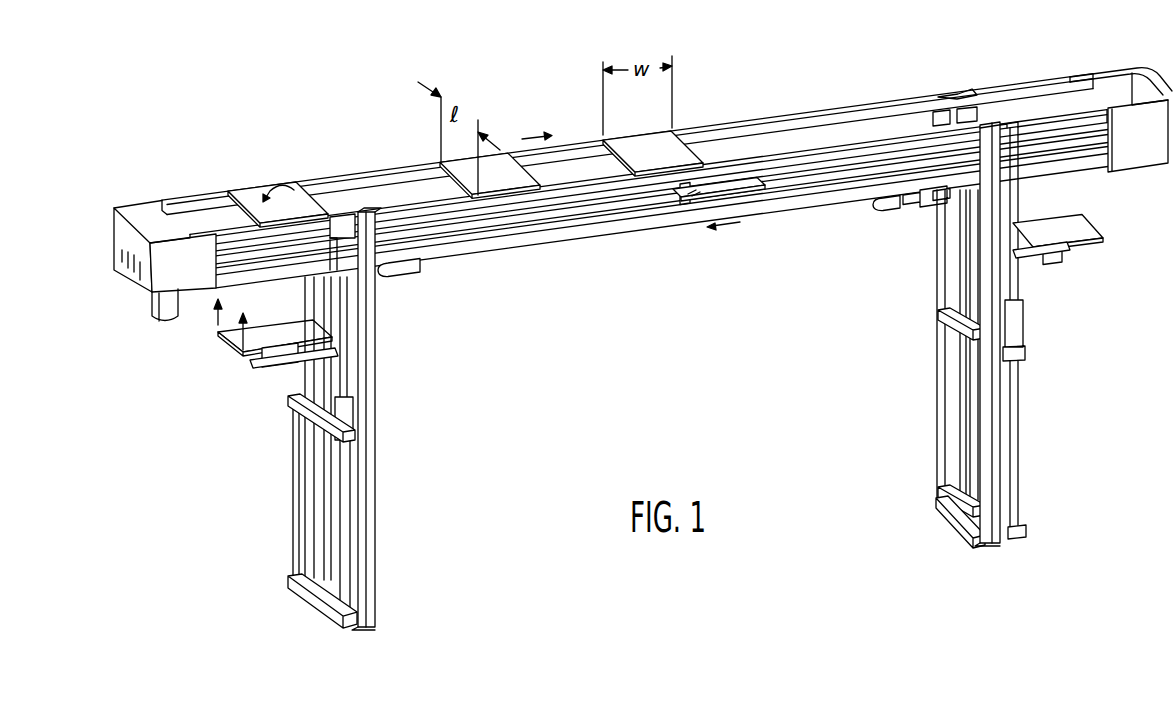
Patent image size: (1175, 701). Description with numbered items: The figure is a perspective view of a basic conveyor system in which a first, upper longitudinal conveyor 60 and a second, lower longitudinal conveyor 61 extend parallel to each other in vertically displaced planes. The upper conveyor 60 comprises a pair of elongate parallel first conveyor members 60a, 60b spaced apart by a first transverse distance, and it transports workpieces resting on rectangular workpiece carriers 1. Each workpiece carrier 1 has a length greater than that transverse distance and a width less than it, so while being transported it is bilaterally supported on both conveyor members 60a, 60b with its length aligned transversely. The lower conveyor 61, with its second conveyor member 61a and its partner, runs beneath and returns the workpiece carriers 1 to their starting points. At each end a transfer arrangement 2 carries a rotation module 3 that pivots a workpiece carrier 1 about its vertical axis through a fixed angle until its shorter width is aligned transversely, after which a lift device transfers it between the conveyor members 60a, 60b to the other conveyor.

The workpiece carrier 1 is at (657, 140).
The transfer arrangement 2 is at (293, 412).
The rotation module 3 is at (268, 361).
The first longitudinal conveyor 60 is at (775, 165).
The first conveyor member 60a is at (897, 147).
The first conveyor member 60b is at (844, 117).
The second longitudinal conveyor 61 is at (800, 197).
The second conveyor member 61a is at (841, 199).